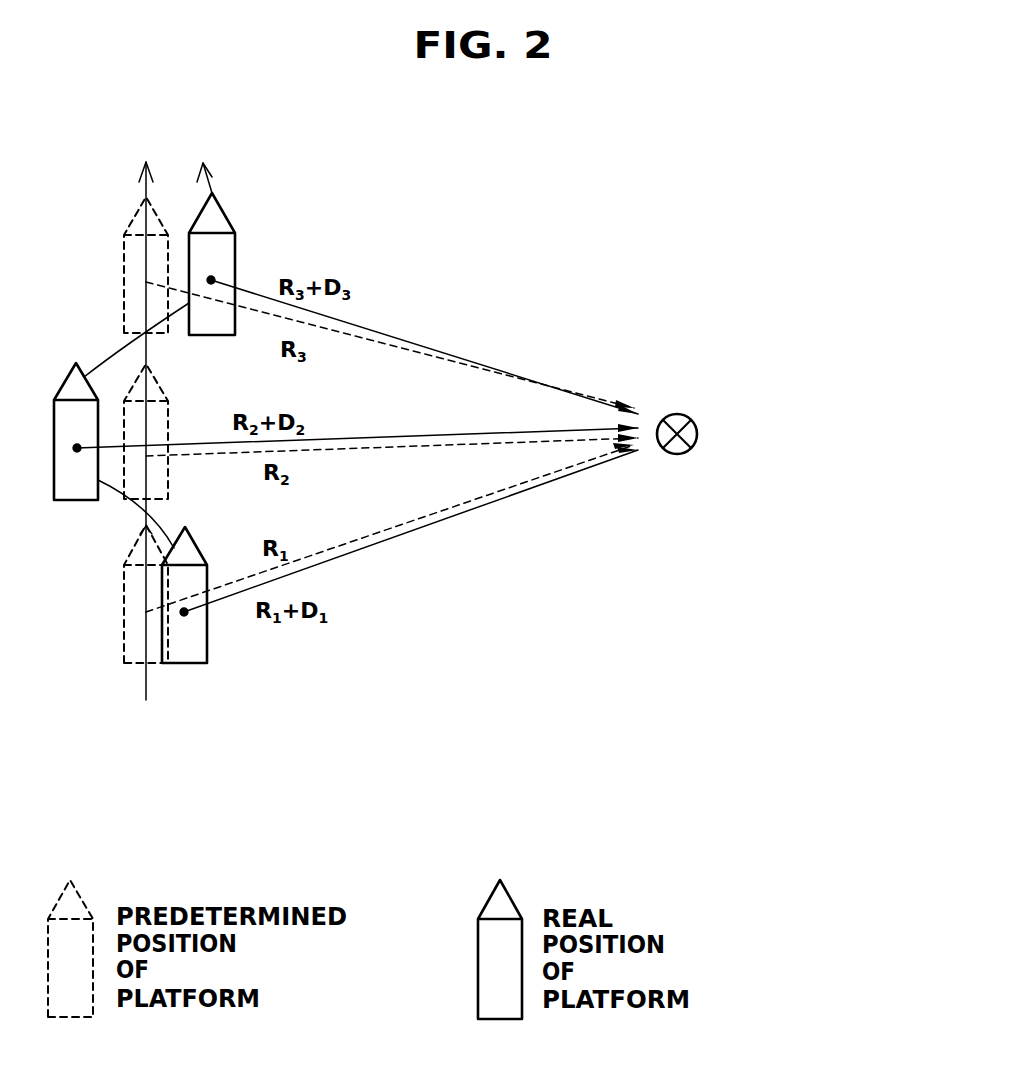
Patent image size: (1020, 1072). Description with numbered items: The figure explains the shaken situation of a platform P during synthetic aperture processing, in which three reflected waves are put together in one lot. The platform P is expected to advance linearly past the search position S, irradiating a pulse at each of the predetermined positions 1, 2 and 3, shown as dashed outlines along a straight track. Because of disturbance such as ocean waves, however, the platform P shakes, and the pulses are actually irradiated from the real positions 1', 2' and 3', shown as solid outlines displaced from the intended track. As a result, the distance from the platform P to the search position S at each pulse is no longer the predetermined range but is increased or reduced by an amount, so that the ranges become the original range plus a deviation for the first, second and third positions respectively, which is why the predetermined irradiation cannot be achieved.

The predetermined position of platform 1 is at (146, 594).
The predetermined position of platform 2 is at (146, 431).
The predetermined position of platform 3 is at (146, 265).
The real position of platform 1' is at (184, 595).
The real position of platform 2' is at (76, 431).
The real position of platform 3' is at (212, 249).
The platform P is at (233, 222).
The search position S is at (778, 412).